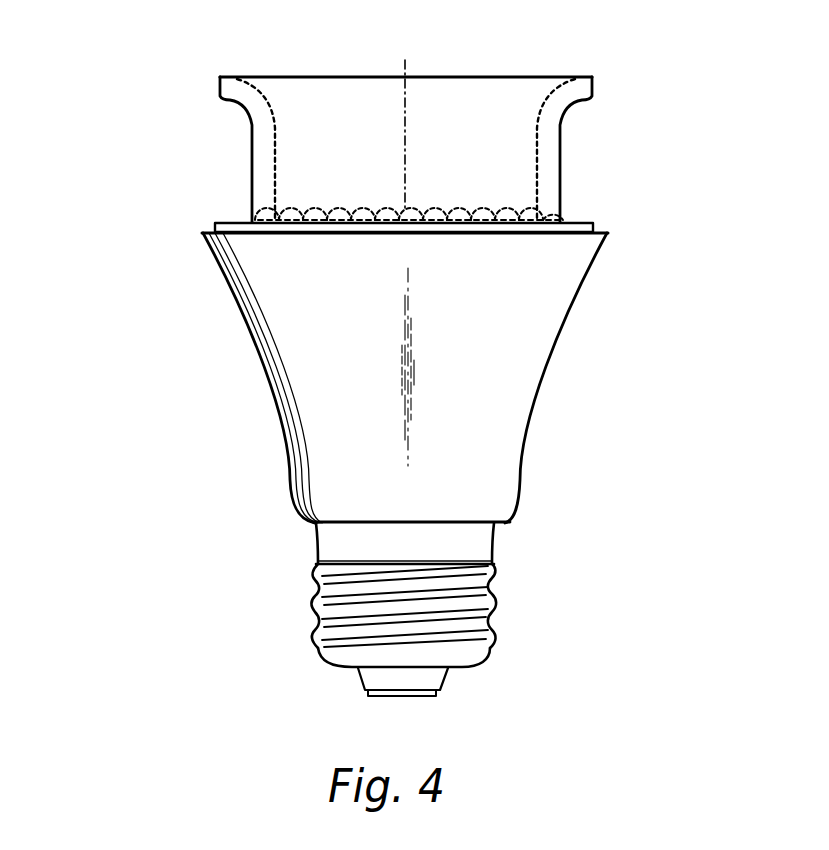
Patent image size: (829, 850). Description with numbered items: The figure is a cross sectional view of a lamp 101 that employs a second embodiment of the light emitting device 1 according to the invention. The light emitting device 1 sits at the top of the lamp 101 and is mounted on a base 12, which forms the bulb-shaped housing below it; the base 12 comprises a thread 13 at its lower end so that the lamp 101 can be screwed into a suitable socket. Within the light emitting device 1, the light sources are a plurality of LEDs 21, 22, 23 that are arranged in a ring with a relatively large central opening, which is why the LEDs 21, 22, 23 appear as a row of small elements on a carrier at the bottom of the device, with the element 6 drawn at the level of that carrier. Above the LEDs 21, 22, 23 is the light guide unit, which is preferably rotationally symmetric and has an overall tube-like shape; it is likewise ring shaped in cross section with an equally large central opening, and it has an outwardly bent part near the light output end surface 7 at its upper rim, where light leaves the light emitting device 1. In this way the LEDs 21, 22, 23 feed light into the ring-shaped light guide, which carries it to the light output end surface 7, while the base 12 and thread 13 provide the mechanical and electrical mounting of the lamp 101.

The light emitting device 1 is at (485, 117).
The light source carrier plate 6 is at (557, 222).
The light output end surface 7 is at (592, 90).
The base 12 is at (493, 451).
The thread 13 is at (475, 620).
The LED 21 is at (323, 208).
The LED 22 is at (377, 207).
The LED 23 is at (433, 210).
The lamp 101 is at (143, 407).